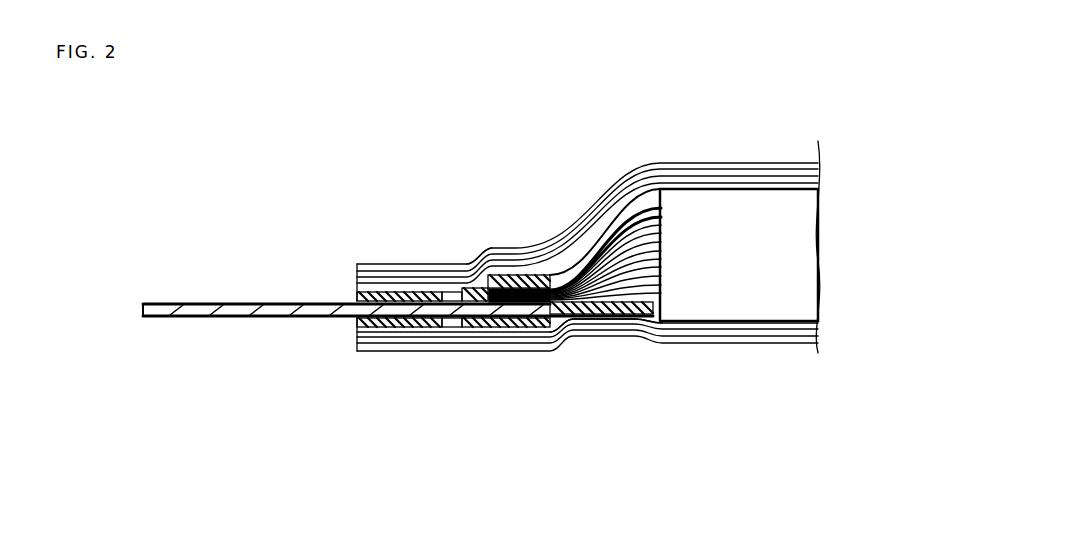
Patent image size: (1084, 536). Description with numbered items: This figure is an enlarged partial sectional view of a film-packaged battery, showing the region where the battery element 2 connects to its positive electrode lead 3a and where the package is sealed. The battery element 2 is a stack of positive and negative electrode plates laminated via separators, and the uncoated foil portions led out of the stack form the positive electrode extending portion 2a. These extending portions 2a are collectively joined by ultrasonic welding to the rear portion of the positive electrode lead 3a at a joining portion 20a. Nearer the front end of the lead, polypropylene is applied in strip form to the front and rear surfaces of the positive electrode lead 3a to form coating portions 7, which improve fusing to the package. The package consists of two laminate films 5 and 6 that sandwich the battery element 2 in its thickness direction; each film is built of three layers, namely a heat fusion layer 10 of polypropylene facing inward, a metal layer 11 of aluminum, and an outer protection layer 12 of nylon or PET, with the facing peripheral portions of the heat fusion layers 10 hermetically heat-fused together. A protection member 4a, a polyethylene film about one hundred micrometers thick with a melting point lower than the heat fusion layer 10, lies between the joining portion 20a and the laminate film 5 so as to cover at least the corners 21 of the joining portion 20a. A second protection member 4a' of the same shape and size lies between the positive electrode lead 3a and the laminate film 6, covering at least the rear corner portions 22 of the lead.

The battery element 2 is at (719, 218).
The positive electrode extending portion 2a is at (647, 207).
The positive electrode lead 3a is at (150, 303).
The protection member 4a is at (519, 229).
The protection member 4a' is at (506, 374).
The laminate film 5 is at (424, 259).
The laminate film 6 is at (433, 361).
The coating portion 7 is at (372, 291).
The heat fusion layer 10 is at (352, 284).
The metal layer 11 is at (350, 273).
The protection layer 12 is at (350, 263).
The joining portion 20a is at (566, 335).
The corners 21 is at (480, 252).
The rear corner portions 22 is at (546, 315).